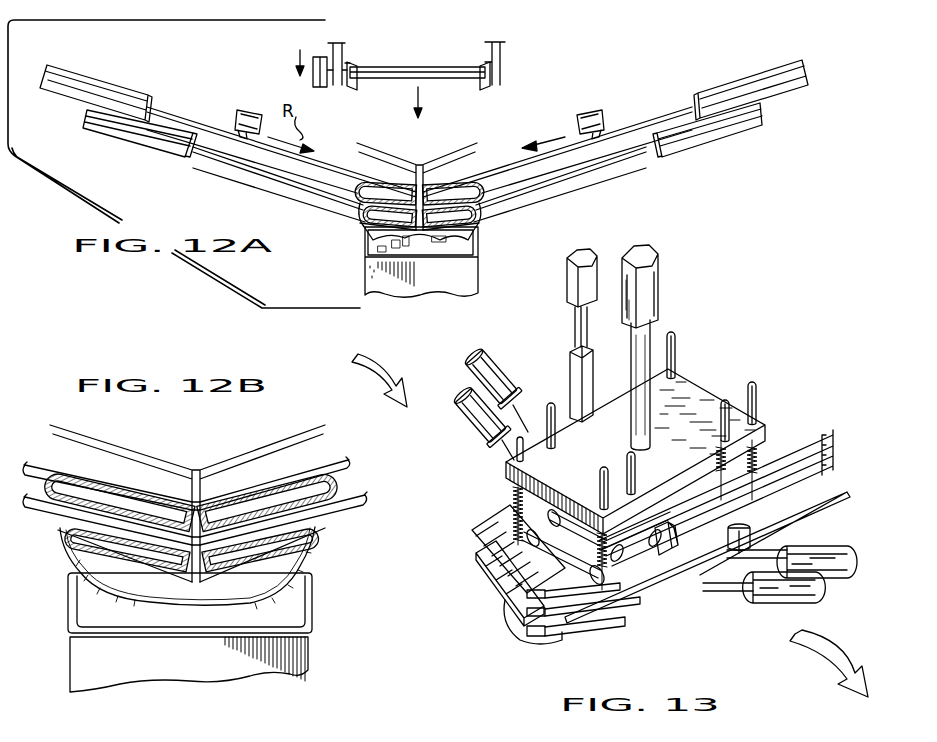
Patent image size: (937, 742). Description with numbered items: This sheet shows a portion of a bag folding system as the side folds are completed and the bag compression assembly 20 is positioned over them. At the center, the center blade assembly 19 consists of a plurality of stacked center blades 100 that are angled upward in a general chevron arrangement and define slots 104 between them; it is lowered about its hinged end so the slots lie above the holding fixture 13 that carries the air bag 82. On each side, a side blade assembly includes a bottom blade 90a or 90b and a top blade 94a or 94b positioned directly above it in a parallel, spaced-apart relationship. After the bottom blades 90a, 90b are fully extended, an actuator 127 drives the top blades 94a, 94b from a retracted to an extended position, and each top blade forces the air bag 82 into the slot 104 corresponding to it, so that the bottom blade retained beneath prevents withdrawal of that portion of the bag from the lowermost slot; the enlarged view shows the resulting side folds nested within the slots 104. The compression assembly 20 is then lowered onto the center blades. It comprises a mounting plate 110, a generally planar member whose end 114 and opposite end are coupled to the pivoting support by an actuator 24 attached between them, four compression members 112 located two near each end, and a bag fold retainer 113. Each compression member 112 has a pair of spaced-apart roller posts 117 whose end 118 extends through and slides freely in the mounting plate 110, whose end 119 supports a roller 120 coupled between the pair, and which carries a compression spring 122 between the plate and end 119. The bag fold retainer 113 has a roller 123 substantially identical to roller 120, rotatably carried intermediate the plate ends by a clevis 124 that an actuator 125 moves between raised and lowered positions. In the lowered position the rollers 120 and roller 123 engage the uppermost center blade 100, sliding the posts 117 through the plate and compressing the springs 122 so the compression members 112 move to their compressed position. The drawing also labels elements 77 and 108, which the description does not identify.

In FIG. 12B, the holding fixture 13 is at (310, 658).
In FIG. 13, the center blade assembly 19 is at (508, 612).
In FIG. 12A, the bag compression assembly 20 is at (511, 68).
In FIG. 13, the bag compression assembly 20 is at (714, 383).
In FIG. 13, the actuator 24 is at (662, 294).
In FIG. 12B, the housing cavity 77 is at (316, 598).
In FIG. 12A, the air bag 82 is at (356, 216).
In FIG. 12B, the air bag 82 is at (66, 578).
In FIG. 12A, the bottom blade 90a is at (292, 178).
In FIG. 12B, the bottom blade 90a is at (60, 520).
In FIG. 12A, the bottom blade 90b is at (536, 190).
In FIG. 12B, the bottom blade 90b is at (342, 518).
In FIG. 12A, the top blade 94a is at (334, 170).
In FIG. 12B, the top blade 94a is at (110, 498).
In FIG. 12A, the top blade 94b is at (512, 168).
In FIG. 12B, the top blade 94b is at (349, 462).
In FIG. 13, the center blades 100 is at (550, 612).
In FIG. 12A, the slots 104 is at (392, 164).
In FIG. 12B, the slots 104 is at (252, 470).
In FIG. 12A, the spacer bar 108 is at (154, 146).
In FIG. 13, the mounting plate 110 is at (635, 451).
In FIG. 12A, the compression members 112 is at (508, 96).
In FIG. 13, the compression members 112 is at (497, 545).
In FIG. 13, the bag fold retainer 113 is at (663, 590).
In FIG. 13, the end 114 is at (505, 474).
In FIG. 13, the roller posts 117 is at (510, 513).
In FIG. 13, the end 118 is at (552, 405).
In FIG. 13, the end 119 is at (806, 521).
In FIG. 12A, the roller 120 is at (386, 66).
In FIG. 13, the roller 120 is at (510, 605).
In FIG. 13, the compression spring 122 is at (822, 452).
In FIG. 13, the roller 123 is at (667, 552).
In FIG. 12A, the clevis 124 is at (305, 82).
In FIG. 13, the clevis 124 is at (700, 592).
In FIG. 13, the actuator 125 is at (575, 337).
In FIG. 12A, the actuator 127 is at (136, 90).